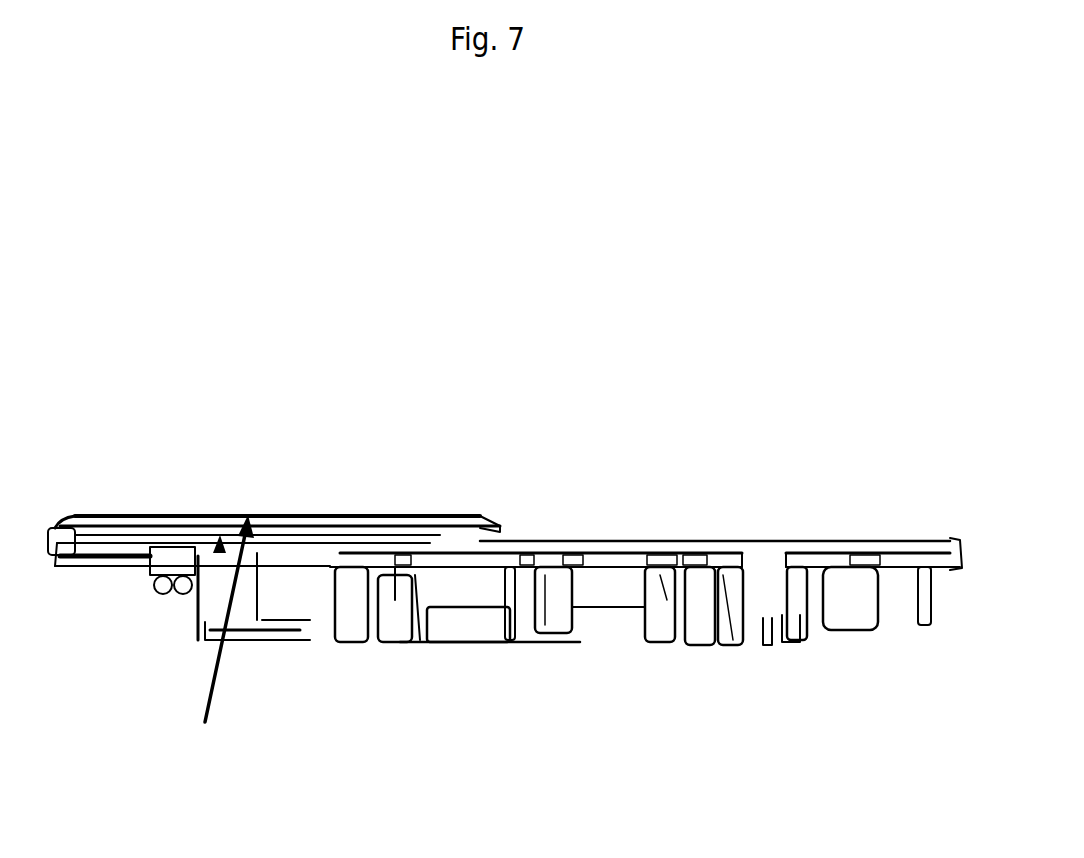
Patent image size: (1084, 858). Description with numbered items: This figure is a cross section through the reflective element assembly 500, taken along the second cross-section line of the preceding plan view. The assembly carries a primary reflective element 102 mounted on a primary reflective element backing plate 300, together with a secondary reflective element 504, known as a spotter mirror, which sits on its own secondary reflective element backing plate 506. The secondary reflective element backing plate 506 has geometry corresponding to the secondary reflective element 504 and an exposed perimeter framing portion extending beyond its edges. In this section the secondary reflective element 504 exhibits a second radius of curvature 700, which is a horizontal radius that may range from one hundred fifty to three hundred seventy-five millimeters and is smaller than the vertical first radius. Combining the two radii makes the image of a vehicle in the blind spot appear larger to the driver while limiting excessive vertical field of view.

The reflective element assembly 500 is at (255, 455).
The secondary reflective element 504 is at (262, 522).
The secondary reflective element backing plate 506 is at (125, 560).
The second radius of curvature 700 is at (215, 640).
The primary reflective element 102 is at (595, 541).
The primary reflective element backing plate 300 is at (498, 611).